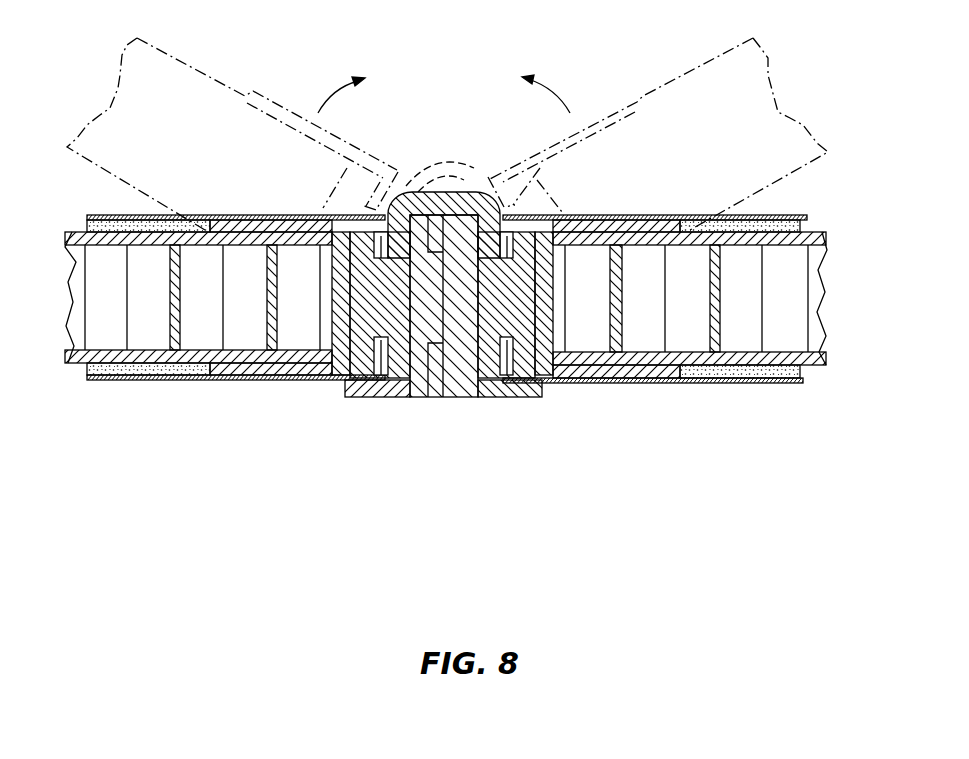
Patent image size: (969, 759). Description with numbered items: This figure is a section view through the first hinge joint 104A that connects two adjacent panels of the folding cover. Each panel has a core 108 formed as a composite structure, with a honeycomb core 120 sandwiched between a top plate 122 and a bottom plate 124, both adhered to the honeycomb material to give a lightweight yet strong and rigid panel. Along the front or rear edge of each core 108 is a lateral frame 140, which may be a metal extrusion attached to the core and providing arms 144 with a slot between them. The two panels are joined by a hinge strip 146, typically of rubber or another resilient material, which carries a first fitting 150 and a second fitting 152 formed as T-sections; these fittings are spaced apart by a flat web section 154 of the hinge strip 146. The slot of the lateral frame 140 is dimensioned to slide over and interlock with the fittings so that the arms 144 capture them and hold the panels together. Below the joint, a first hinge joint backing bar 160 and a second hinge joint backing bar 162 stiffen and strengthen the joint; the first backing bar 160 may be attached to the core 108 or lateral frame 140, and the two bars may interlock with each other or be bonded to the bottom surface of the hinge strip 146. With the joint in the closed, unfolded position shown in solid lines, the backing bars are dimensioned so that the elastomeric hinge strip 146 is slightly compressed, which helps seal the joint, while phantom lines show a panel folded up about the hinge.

The first hinge joint 104A is at (469, 122).
The core 108 is at (790, 330).
The honeycomb core 120 is at (733, 340).
The top plate 122 is at (805, 232).
The bottom plate 124 is at (663, 335).
The lateral frame 140 is at (585, 368).
The arms 144 is at (488, 387).
The hinge strip 146 is at (415, 183).
The first fitting 150 is at (525, 345).
The second fitting 152 is at (345, 370).
The web section 154 is at (480, 182).
The first hinge joint backing bar 160 is at (462, 387).
The second hinge joint backing bar 162 is at (387, 390).